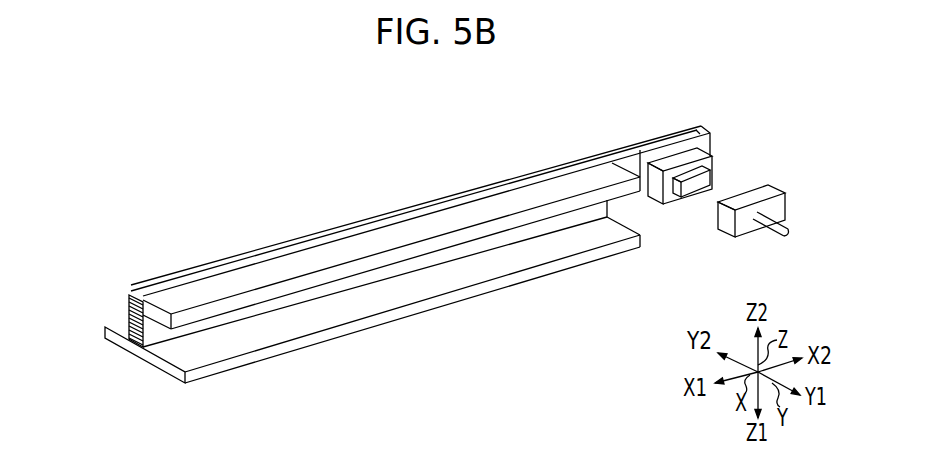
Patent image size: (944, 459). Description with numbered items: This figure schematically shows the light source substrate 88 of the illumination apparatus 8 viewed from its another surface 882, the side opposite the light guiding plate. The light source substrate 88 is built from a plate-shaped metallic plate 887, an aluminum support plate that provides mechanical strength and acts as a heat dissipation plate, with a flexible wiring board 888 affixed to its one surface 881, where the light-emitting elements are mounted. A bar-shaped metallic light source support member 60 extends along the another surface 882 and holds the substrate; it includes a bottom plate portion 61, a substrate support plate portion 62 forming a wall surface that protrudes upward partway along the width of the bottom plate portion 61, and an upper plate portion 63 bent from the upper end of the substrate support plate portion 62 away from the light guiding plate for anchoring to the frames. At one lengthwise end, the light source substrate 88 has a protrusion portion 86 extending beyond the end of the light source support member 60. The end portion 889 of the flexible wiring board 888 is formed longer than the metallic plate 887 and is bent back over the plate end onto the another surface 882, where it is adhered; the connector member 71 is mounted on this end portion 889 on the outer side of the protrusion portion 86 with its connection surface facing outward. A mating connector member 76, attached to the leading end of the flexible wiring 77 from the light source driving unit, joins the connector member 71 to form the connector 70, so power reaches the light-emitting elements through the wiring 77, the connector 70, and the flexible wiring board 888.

The illumination apparatus 8 is at (530, 74).
The light source support member 60 is at (178, 392).
The bottom plate portion 61 is at (163, 372).
The substrate support plate portion 62 is at (142, 340).
The one surface 881 is at (129, 297).
The protrusion portion 86 is at (690, 128).
The light source substrate 88 is at (393, 146).
The flexible wiring board 888 is at (290, 245).
The metallic plate 887 is at (342, 240).
The end portion of the flexible wiring board 889 is at (648, 152).
The upper plate portion 63 is at (230, 305).
The another surface 882 is at (144, 318).
The connector 70 is at (811, 95).
The connector member 71 is at (707, 148).
The connector member 76 is at (753, 193).
The flexible wiring 77 is at (793, 224).